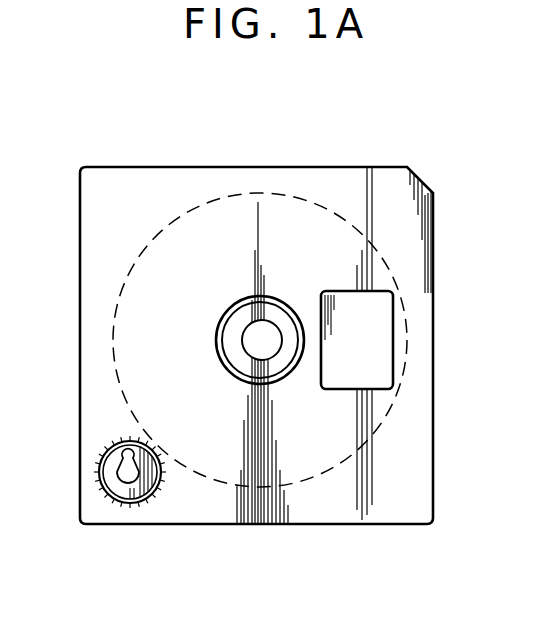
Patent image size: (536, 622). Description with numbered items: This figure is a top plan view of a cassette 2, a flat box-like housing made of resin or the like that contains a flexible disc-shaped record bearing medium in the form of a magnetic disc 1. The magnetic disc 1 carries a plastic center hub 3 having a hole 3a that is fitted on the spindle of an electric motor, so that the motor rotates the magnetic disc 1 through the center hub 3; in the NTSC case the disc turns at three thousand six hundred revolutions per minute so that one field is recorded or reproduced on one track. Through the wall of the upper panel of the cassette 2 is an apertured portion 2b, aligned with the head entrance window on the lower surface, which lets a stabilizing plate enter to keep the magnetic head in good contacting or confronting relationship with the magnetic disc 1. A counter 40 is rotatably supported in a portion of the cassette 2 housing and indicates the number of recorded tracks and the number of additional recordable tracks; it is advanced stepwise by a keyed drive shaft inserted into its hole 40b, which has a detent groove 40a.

The magnetic disc 1 is at (330, 211).
The cassette 2 is at (418, 255).
The apertured portion 2b is at (390, 357).
The center hub 3 is at (233, 355).
The hole 3a is at (252, 338).
The counter 40 is at (107, 480).
The detent groove 40a is at (132, 479).
The hole 40b is at (112, 454).